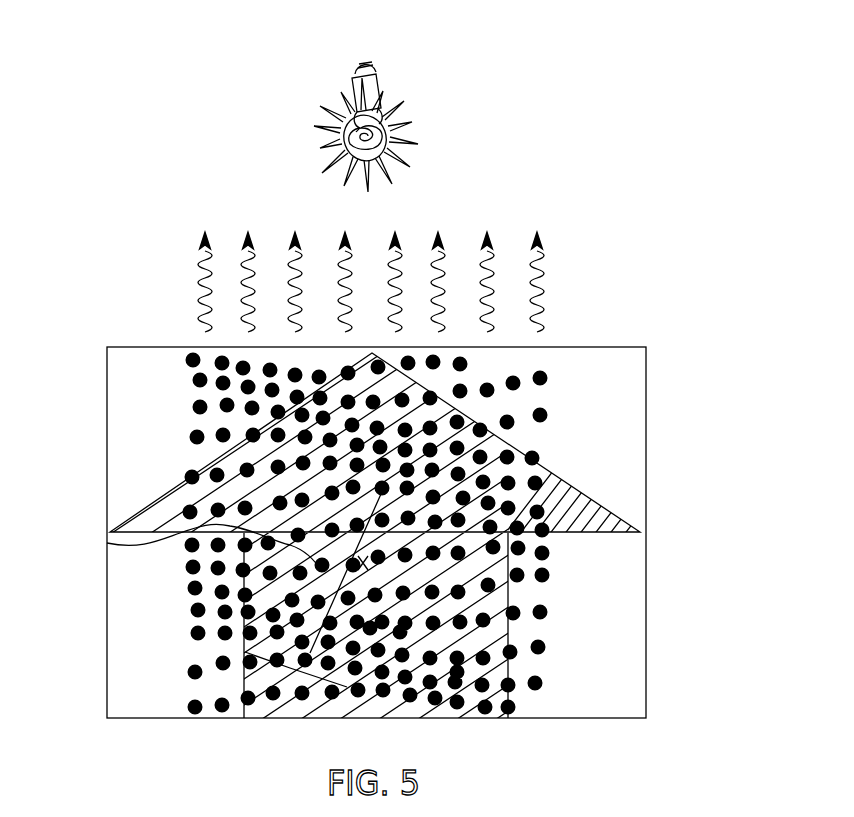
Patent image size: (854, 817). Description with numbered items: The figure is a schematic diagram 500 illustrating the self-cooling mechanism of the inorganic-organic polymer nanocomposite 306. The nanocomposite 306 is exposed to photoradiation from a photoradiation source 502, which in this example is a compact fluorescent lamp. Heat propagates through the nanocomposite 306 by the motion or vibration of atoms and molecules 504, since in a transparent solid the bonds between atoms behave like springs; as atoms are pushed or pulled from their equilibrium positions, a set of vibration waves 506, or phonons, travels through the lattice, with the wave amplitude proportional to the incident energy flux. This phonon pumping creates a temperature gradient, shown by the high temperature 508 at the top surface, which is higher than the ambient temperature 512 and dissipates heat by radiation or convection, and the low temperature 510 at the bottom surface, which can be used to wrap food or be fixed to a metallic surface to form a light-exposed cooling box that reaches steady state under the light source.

The schematic diagram 500 is at (697, 75).
The photoradiation source 502 is at (348, 93).
The ambient temperature 512 is at (413, 205).
The high temperature 508 is at (603, 372).
The inorganic-organic polymer nanocomposite 306 is at (646, 443).
The motion or vibration of atoms and molecules 504 is at (330, 458).
The vibration wave 506 is at (107, 543).
The low temperature 510 is at (622, 681).